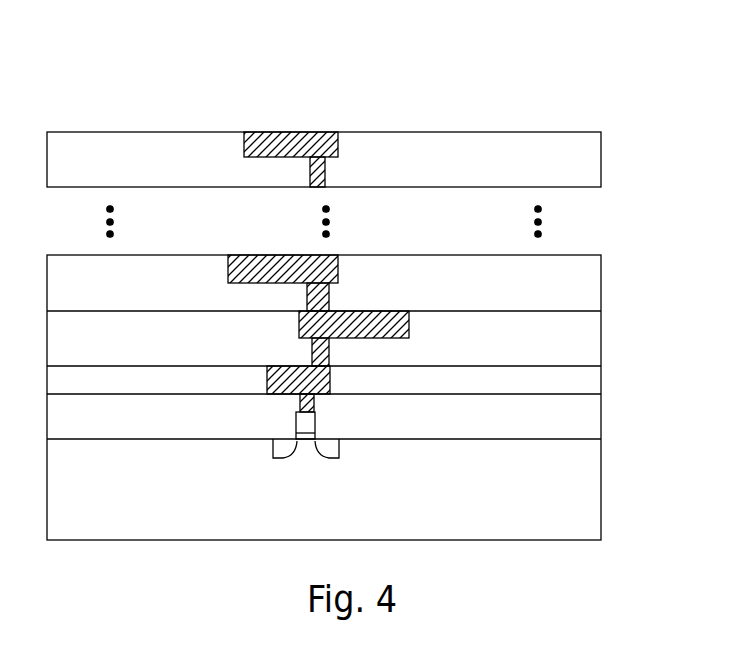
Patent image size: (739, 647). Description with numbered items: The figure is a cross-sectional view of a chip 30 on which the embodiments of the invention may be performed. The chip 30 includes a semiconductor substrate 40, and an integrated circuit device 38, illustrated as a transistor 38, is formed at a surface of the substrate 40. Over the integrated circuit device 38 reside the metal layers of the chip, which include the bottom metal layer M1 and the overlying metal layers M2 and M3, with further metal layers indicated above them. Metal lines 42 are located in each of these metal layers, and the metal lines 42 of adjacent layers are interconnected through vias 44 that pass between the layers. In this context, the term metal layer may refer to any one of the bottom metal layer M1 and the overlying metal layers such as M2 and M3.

The chip 30 is at (588, 108).
The integrated circuit device 38 is at (303, 450).
The semiconductor substrate 40 is at (433, 502).
The metal line 42 is at (338, 145).
The via 44 is at (318, 177).
The bottom metal layer M1 is at (585, 383).
The second metal layer M2 is at (612, 315).
The third metal layer M3 is at (612, 259).